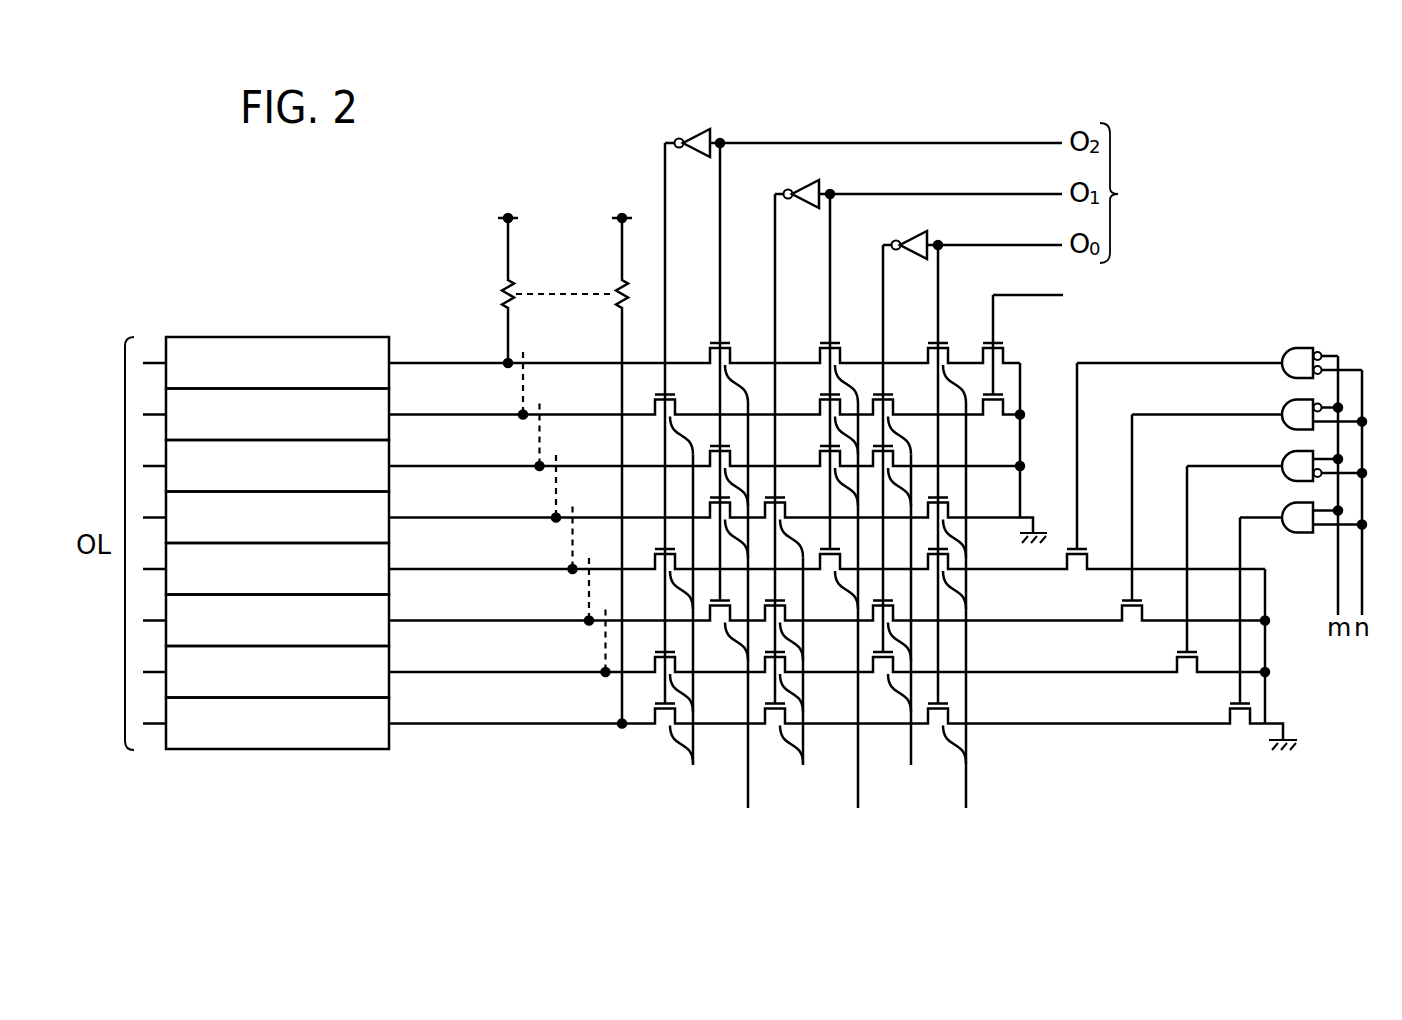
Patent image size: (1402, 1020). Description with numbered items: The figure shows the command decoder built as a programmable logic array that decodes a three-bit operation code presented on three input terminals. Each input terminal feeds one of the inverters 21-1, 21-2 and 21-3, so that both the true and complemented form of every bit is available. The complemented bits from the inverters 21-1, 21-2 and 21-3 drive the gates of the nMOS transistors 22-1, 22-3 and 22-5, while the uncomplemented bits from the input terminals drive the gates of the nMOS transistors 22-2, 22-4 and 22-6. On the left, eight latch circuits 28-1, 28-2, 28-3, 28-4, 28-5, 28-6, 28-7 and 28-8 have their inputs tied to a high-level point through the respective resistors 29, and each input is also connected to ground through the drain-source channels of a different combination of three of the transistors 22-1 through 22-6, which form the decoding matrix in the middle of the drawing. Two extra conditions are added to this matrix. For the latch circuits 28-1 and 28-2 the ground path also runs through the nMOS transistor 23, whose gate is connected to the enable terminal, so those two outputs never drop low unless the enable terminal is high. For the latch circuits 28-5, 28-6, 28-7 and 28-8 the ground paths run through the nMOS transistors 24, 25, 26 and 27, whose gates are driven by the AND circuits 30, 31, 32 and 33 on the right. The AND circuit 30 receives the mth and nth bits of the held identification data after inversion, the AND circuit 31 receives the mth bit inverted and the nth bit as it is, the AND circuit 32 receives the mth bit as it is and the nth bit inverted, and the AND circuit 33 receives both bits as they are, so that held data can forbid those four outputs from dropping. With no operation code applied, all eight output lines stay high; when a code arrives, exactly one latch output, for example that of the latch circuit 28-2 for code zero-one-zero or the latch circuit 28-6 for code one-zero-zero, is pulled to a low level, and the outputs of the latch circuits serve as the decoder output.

The inverter 21-1 is at (690, 132).
The inverter 21-2 is at (806, 184).
The inverter 21-3 is at (914, 234).
The nMOS transistor 22-1 is at (700, 628).
The nMOS transistor 22-2 is at (755, 623).
The nMOS transistor 22-3 is at (810, 680).
The nMOS transistor 22-4 is at (865, 623).
The nMOS transistor 22-5 is at (920, 628).
The nMOS transistor 22-6 is at (975, 623).
The nMOS transistor 23 is at (1008, 352).
The nMOS transistor 24 is at (1077, 573).
The nMOS transistor 25 is at (1132, 624).
The nMOS transistor 26 is at (1187, 676).
The nMOS transistor 27 is at (1240, 727).
The latch circuit 28-1 is at (374, 337).
The latch circuit 28-2 is at (390, 402).
The latch circuit 28-3 is at (390, 454).
The latch circuit 28-4 is at (390, 505).
The latch circuit 28-5 is at (390, 556).
The latch circuit 28-6 is at (390, 608).
The latch circuit 28-7 is at (390, 660).
The latch circuit 28-8 is at (390, 711).
The resistors 29 is at (617, 289).
The AND circuit 30 is at (1290, 350).
The AND circuit 31 is at (1288, 404).
The AND circuit 32 is at (1288, 456).
The AND circuit 33 is at (1288, 508).